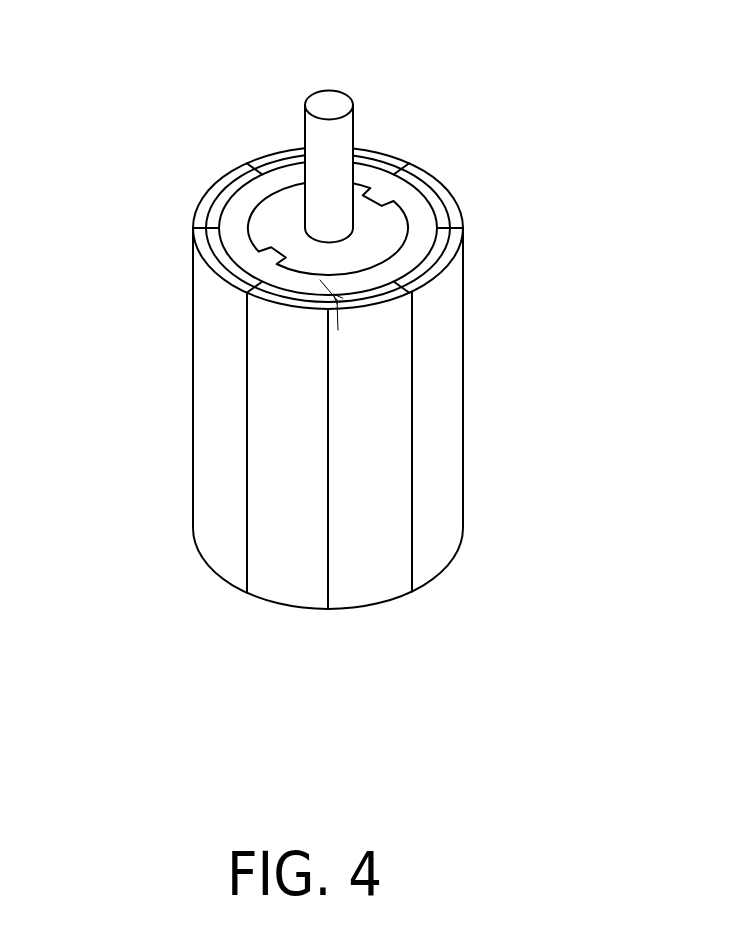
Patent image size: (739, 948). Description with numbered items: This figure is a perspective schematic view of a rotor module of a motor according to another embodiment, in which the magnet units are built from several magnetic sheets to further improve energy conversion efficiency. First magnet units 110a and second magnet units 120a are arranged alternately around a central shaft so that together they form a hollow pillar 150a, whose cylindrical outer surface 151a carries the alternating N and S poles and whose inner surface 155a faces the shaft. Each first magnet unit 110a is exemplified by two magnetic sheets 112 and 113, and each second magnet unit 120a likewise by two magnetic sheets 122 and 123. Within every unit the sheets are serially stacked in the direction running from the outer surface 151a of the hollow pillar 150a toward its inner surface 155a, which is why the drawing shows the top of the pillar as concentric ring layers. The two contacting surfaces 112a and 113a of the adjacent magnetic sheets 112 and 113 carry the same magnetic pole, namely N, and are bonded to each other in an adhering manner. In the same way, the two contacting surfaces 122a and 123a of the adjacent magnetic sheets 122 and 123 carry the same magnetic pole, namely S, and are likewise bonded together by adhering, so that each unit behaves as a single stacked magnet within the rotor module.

The first magnet unit 110a is at (358, 234).
The magnetic sheet 112 is at (309, 284).
The contacting surface 112a is at (331, 302).
The magnetic sheet 113 is at (338, 300).
The contacting surface 113a is at (337, 298).
The second magnet unit 120a is at (449, 231).
The magnetic sheet 122 is at (452, 240).
The contacting surface 122a is at (447, 255).
The magnetic sheet 123 is at (452, 226).
The contacting surface 123a is at (430, 265).
The hollow pillar 150a is at (416, 460).
The outer surface 151a is at (277, 569).
The inner surface 155a is at (277, 267).